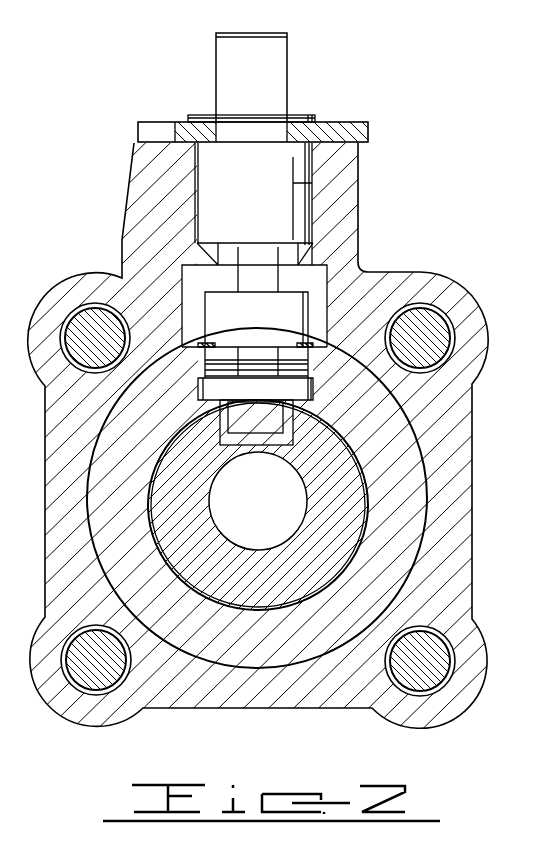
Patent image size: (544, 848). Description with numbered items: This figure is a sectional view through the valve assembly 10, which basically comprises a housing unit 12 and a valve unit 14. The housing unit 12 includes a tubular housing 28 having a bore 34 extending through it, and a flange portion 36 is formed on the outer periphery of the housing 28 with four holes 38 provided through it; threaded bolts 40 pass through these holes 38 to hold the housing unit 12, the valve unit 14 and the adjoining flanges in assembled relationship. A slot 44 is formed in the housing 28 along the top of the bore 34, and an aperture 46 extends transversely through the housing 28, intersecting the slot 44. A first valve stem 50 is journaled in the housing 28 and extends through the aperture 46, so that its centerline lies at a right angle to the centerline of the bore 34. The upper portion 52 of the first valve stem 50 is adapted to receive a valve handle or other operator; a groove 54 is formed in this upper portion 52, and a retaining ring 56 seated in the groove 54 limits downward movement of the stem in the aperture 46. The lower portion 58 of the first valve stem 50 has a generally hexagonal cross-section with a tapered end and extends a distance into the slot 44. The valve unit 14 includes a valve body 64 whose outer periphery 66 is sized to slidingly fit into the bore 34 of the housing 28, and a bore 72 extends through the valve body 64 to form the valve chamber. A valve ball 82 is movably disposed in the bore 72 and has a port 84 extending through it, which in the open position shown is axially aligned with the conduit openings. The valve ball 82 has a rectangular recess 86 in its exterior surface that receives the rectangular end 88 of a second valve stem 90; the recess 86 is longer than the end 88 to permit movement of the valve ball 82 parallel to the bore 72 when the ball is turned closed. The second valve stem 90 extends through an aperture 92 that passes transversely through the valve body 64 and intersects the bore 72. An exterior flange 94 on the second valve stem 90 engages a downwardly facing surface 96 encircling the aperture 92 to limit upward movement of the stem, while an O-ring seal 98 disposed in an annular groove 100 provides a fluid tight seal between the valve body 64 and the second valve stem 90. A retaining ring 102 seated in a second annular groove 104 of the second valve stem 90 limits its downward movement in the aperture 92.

The valve assembly 10 is at (331, 123).
The housing unit 12 is at (358, 208).
The valve unit 14 is at (423, 470).
The tubular housing 28 is at (342, 246).
The bore 34 is at (252, 666).
The flange portion 36 is at (112, 271).
The holes 38 is at (66, 334).
The threaded bolts 40 is at (90, 322).
The slot 44 is at (186, 291).
The aperture 46 is at (194, 174).
The first valve stem 50 is at (295, 184).
The upper portion 52 is at (281, 56).
The groove 54 is at (239, 118).
The retaining ring 56 is at (202, 118).
The lower portion 58 is at (232, 264).
The valve body 64 is at (205, 643).
The outer periphery 66 is at (333, 657).
The bore 72 is at (201, 582).
The valve ball 82 is at (356, 543).
The port 84 is at (258, 501).
The rectangular recess 86 is at (224, 439).
The rectangular end 88 is at (233, 420).
The second valve stem 90 is at (314, 353).
The aperture 92 is at (204, 366).
The exterior flange 94 is at (313, 390).
The downwardly facing surface 96 is at (198, 392).
The O-ring seal 98 is at (241, 324).
The annular groove 100 is at (246, 374).
The retaining ring 102 is at (230, 339).
The second annular groove 104 is at (268, 339).